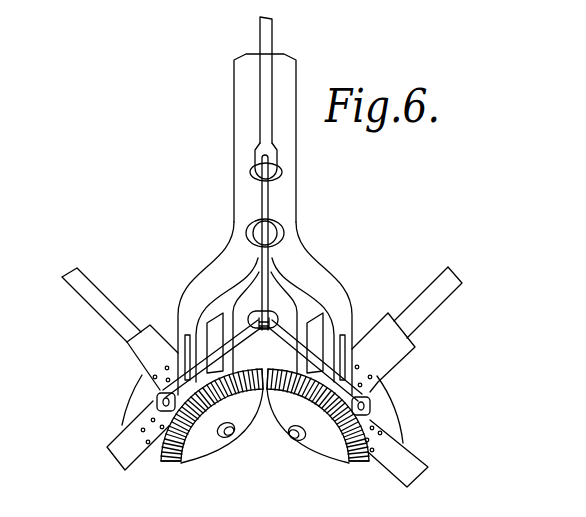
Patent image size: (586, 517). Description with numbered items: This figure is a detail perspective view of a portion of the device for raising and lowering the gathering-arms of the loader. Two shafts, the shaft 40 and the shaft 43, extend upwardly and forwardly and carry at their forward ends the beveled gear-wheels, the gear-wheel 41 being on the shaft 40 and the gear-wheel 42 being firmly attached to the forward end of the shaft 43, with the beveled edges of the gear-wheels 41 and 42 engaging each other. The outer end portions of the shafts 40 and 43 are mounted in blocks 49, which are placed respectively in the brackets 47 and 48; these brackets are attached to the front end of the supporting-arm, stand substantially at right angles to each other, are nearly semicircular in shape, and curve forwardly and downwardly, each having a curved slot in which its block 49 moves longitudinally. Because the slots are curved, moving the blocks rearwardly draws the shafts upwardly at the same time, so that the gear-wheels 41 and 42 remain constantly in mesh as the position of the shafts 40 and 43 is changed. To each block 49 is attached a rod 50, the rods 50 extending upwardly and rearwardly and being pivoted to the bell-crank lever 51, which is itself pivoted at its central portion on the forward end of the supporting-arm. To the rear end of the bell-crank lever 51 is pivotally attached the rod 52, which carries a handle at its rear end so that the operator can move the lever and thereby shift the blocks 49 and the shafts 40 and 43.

The rod 52 is at (272, 32).
The bell-crank lever 51 is at (267, 269).
The bracket 48 is at (328, 298).
The bracket 47 is at (180, 315).
The rod 50 is at (238, 341).
The block 49 is at (156, 405).
The shaft 43 is at (221, 434).
The shaft 40 is at (305, 438).
The beveled gear-wheel 42 is at (218, 462).
The beveled gear-wheel 41 is at (322, 467).